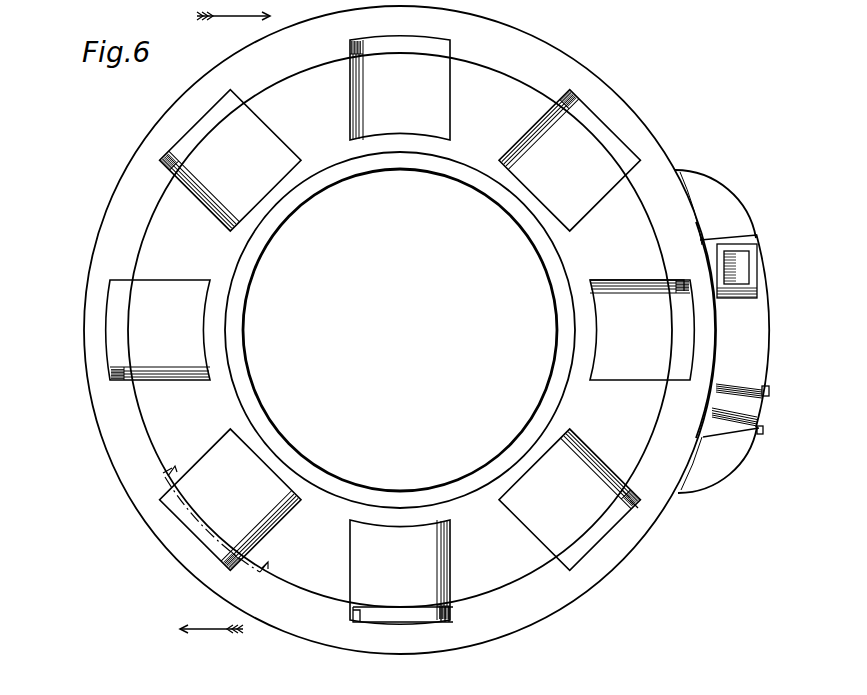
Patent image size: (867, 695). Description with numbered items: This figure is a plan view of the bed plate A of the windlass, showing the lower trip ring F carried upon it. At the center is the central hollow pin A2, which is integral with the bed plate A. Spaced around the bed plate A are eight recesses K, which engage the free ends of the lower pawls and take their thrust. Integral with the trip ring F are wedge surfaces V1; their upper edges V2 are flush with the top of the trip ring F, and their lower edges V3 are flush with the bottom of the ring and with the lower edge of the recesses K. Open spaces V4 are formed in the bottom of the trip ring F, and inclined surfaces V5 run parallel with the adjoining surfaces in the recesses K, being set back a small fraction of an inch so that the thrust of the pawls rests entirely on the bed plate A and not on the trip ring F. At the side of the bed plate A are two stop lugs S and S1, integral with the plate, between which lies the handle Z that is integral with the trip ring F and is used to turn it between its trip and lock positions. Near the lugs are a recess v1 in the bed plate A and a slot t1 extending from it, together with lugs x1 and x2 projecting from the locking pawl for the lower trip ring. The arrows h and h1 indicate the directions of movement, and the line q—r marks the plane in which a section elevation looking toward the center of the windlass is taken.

The lower trip ring F is at (107, 432).
The bed plate A is at (237, 421).
The central hollow pin A2 is at (238, 348).
The recesses K is at (400, 330).
The wedge surfaces V1 is at (400, 618).
The upper edges of wedge surfaces V2 is at (360, 617).
The lower edges of wedge surfaces V3 is at (442, 620).
The open spaces V4 is at (628, 500).
The inclined surfaces V5 is at (638, 506).
The section plane line q—r q is at (200, 515).
The section plane line q— r is at (263, 578).
The direction of rotation arrow h is at (233, 10).
The reverse direction arrow h1 is at (211, 616).
The stop lug S is at (735, 208).
The stop lug S1 is at (733, 474).
The handle Z is at (752, 411).
The lug x1 is at (761, 433).
The lug x2 is at (770, 391).
The recess v1 is at (745, 260).
The slot t1 is at (759, 290).